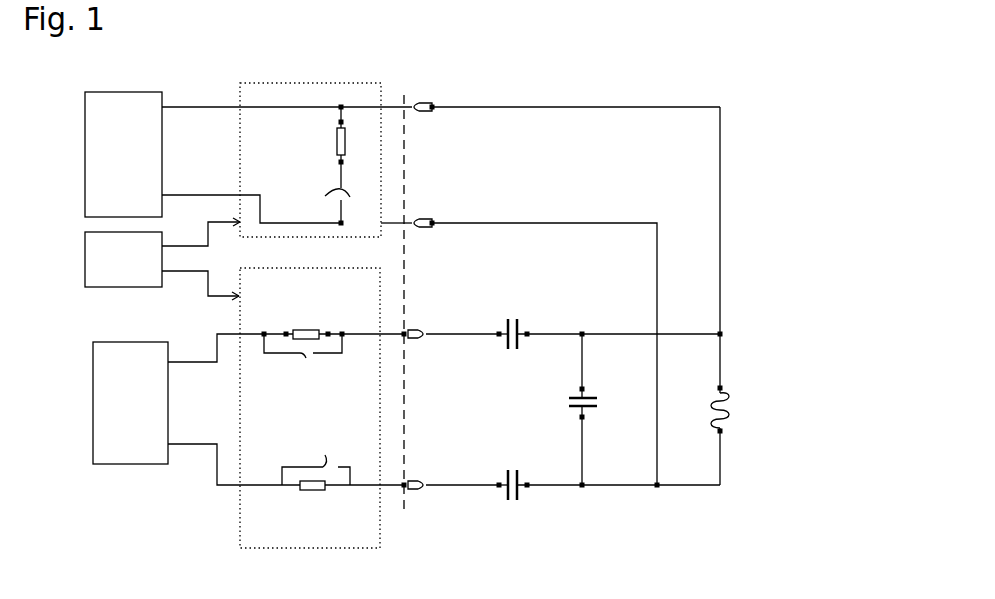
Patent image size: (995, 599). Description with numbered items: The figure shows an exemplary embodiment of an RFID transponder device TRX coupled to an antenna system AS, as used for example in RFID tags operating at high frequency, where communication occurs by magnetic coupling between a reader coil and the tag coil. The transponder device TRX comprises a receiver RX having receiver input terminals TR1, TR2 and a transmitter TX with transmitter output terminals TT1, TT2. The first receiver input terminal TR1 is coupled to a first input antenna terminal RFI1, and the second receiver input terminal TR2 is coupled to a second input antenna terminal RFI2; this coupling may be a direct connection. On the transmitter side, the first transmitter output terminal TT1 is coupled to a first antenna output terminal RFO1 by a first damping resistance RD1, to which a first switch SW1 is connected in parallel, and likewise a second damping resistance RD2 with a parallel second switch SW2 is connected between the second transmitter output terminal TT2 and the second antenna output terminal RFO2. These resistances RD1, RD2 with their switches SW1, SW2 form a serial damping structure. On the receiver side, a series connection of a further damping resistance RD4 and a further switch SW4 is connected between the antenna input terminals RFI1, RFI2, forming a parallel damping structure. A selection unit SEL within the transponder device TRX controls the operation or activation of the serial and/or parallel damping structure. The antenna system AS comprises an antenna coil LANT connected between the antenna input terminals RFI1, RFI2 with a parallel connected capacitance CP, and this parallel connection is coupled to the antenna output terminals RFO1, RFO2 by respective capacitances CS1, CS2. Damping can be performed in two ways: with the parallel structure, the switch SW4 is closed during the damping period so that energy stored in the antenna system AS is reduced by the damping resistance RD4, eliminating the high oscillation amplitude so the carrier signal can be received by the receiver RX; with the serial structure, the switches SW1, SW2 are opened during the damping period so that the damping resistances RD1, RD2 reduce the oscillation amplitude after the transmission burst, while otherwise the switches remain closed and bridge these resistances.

The RFID transponder device TRX is at (285, 69).
The receiver RX is at (123, 154).
The selection unit SEL is at (162, 259).
The transmitter TX is at (130, 403).
The first receiver input terminal TR1 is at (163, 109).
The second receiver input terminal TR2 is at (163, 194).
The first transmitter output terminal TT1 is at (216, 363).
The second transmitter output terminal TT2 is at (225, 448).
The further damping resistance RD4 is at (338, 140).
The further switch SW4 is at (309, 204).
The first damping resistance RD1 is at (299, 327).
The first switch SW1 is at (347, 378).
The second damping resistance RD2 is at (317, 491).
The second switch SW2 is at (325, 455).
The first input antenna terminal RFI1 is at (530, 122).
The second input antenna terminal RFI2 is at (519, 338).
The first antenna output terminal RFO1 is at (451, 321).
The second antenna output terminal RFO2 is at (451, 472).
The capacitance CS1 is at (540, 330).
The capacitance CS2 is at (540, 481).
The capacitance CP is at (596, 410).
The antenna system AS is at (738, 313).
The antenna coil LANT is at (752, 409).